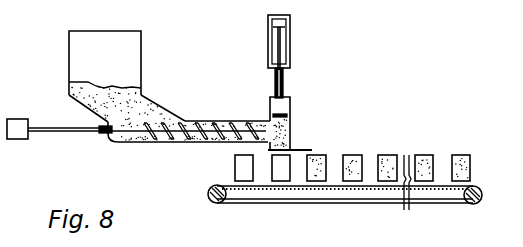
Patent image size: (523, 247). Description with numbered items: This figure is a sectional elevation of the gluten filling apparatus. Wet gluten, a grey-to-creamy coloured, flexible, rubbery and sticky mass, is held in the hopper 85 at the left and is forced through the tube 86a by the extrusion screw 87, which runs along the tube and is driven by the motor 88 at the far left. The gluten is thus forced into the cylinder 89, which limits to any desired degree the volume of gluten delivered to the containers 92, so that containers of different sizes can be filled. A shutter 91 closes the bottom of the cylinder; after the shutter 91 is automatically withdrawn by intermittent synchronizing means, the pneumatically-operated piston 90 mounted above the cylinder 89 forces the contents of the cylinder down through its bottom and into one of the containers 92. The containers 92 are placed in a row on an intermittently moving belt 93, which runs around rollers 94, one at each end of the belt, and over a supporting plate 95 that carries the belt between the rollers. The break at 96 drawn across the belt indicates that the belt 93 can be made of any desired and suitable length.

The hopper 85 is at (129, 57).
The tube 86a is at (197, 121).
The extrusion screw 87 is at (176, 142).
The motor 88 is at (15, 127).
The cylinder 89 is at (289, 133).
The pneumatically-operated piston 90 is at (288, 105).
The shutter 91 is at (311, 150).
The containers 92 is at (235, 164).
The belt 93 is at (275, 201).
The rollers 94 is at (471, 204).
The supporting plate 95 is at (316, 190).
The break 96 is at (406, 155).